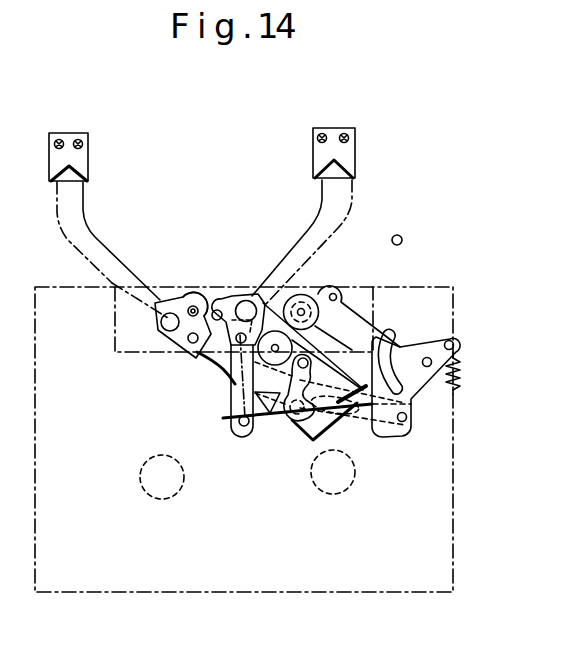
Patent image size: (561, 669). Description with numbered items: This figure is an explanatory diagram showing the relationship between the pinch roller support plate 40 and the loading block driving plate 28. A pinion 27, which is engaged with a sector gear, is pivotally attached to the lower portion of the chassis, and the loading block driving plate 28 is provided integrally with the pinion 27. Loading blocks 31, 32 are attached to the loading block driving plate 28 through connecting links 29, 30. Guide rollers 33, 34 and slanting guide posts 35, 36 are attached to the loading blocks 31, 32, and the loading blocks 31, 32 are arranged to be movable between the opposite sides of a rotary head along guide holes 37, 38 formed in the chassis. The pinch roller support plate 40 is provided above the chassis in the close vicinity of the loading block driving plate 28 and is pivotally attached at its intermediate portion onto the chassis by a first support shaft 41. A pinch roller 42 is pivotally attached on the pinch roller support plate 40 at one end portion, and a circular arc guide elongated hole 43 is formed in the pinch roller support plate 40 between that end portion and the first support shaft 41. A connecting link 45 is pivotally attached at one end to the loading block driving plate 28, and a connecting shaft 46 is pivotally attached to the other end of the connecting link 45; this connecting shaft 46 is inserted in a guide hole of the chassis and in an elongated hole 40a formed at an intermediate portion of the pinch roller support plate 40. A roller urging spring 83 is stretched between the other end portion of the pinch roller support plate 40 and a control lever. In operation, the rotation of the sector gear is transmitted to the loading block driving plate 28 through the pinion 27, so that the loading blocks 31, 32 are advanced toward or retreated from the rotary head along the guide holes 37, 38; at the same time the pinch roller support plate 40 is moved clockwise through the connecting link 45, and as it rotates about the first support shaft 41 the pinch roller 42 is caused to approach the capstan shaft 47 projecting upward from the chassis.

The pinion 27 is at (305, 332).
The loading block driving plate 28 is at (313, 443).
The connecting link 29 is at (216, 358).
The connecting link 30 is at (237, 385).
The loading block 31 is at (160, 336).
The loading block 32 is at (248, 290).
The guide roller 33 is at (160, 300).
The guide roller 34 is at (280, 256).
The slanting guide post 35 is at (194, 305).
The slanting guide post 36 is at (216, 308).
The guide hole 37 is at (68, 232).
The guide hole 38 is at (335, 226).
The pinch roller support plate 40 is at (374, 330).
The elongated hole 40a is at (405, 432).
The first support shaft 41 is at (428, 368).
The pinch roller 42 is at (293, 284).
The circular arc guide elongated hole 43 is at (392, 341).
The connecting link 45 is at (360, 425).
The connecting shaft 46 is at (408, 421).
The capstan shaft 47 is at (402, 243).
The roller urging spring 83 is at (460, 393).